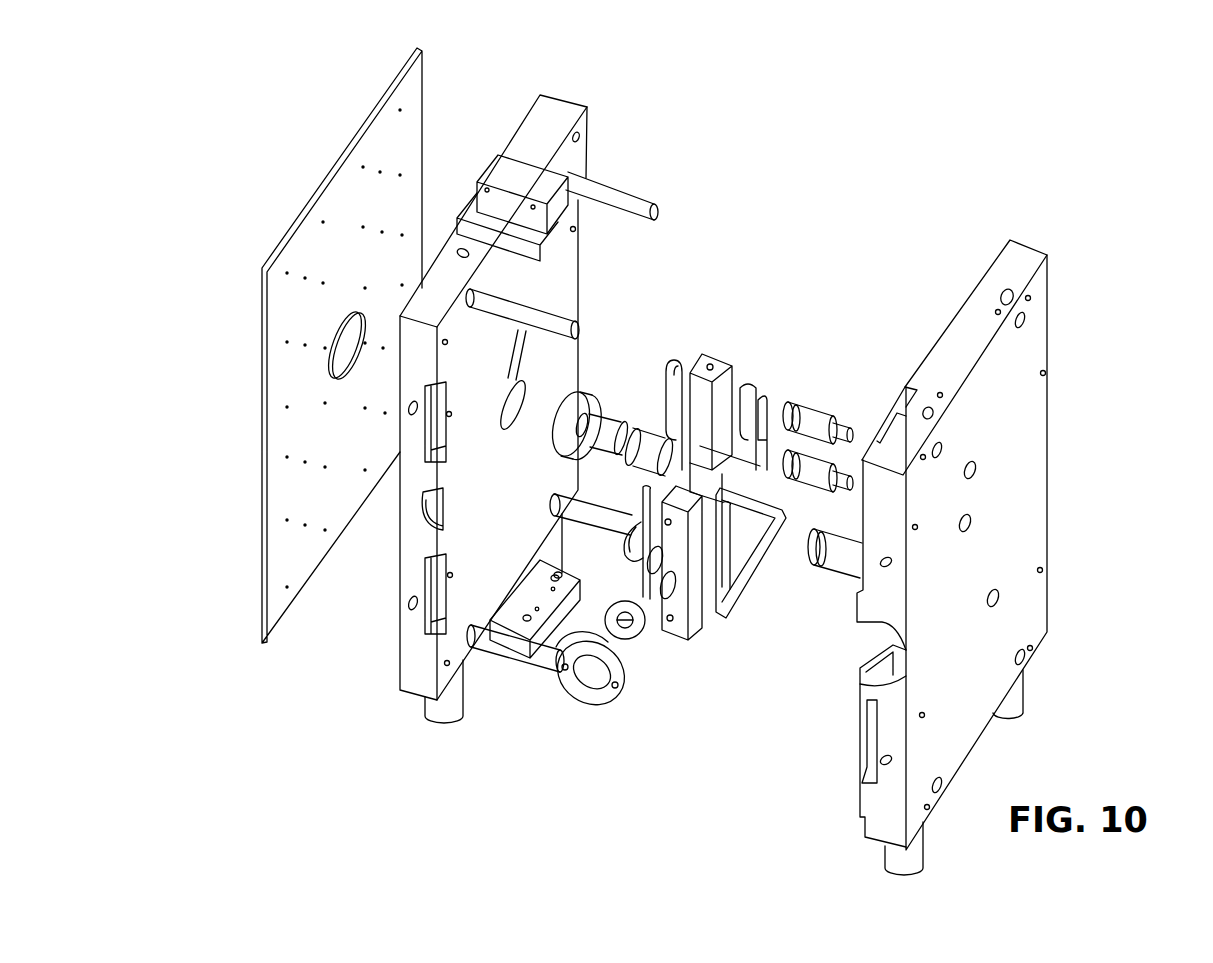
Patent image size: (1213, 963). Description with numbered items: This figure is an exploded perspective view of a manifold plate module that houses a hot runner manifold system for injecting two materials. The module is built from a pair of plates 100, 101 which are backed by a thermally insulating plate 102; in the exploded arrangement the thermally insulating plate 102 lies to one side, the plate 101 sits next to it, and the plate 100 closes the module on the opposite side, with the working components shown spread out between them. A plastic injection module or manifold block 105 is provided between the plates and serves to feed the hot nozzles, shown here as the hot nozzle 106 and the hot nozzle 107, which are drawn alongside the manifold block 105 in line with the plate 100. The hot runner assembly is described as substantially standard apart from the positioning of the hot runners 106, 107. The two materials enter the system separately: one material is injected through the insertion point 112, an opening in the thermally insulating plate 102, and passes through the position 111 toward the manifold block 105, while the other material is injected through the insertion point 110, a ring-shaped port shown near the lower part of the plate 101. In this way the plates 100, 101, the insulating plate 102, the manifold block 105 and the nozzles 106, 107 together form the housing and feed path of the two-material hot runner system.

The plate 100 is at (1027, 435).
The plate 101 is at (557, 114).
The thermally insulating plate 102 is at (290, 227).
The manifold block 105 is at (727, 362).
The hot nozzle 106 is at (820, 407).
The hot nozzle 107 is at (841, 547).
The insertion point 110 is at (592, 694).
The position 111 is at (608, 412).
The insertion point 112 is at (333, 363).